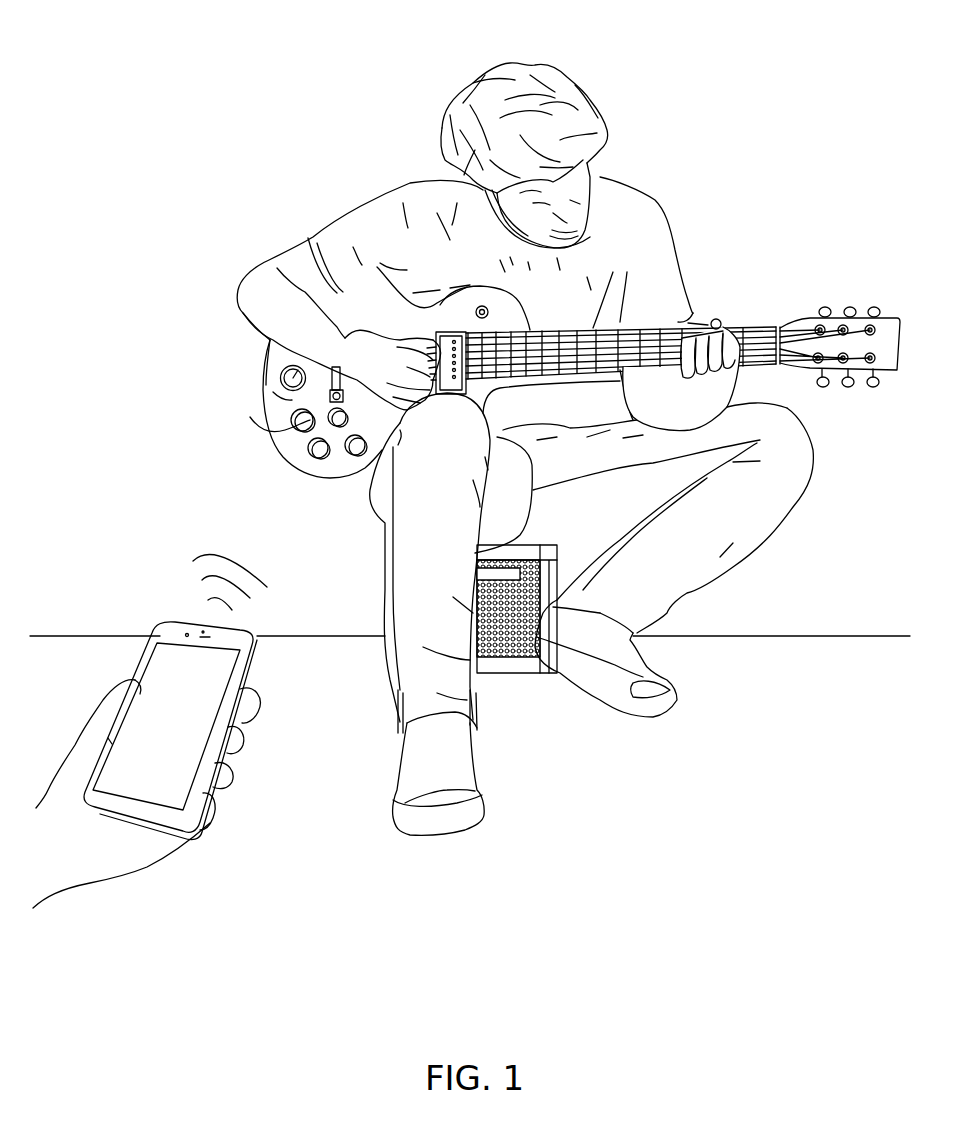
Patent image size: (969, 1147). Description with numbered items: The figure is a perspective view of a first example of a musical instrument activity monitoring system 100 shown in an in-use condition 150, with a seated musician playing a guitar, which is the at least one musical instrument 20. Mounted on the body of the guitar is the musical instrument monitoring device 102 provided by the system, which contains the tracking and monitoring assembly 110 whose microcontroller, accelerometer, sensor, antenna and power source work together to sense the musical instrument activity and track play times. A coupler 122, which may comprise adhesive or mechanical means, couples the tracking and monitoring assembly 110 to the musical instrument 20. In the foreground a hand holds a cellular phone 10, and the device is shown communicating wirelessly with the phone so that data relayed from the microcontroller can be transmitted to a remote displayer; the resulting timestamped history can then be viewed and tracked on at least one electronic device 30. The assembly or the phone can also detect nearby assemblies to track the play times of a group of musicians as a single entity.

The musical instrument activity monitoring system 100 is at (762, 34).
The in-use condition 150 is at (762, 65).
The musical instrument 20 is at (745, 332).
The tracking and monitoring assembly 110 is at (240, 360).
The coupler 122 is at (278, 345).
The musical instrument monitoring device 102 is at (282, 379).
The electronic device 30 is at (129, 660).
The cellular phone 10 is at (222, 662).